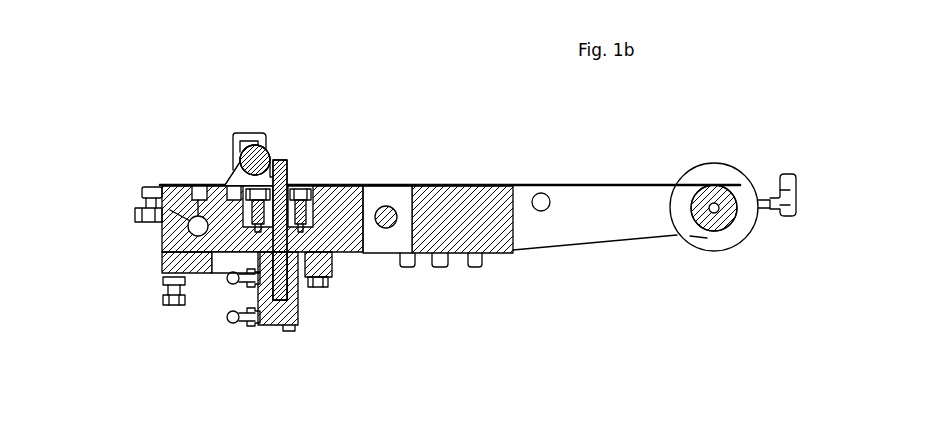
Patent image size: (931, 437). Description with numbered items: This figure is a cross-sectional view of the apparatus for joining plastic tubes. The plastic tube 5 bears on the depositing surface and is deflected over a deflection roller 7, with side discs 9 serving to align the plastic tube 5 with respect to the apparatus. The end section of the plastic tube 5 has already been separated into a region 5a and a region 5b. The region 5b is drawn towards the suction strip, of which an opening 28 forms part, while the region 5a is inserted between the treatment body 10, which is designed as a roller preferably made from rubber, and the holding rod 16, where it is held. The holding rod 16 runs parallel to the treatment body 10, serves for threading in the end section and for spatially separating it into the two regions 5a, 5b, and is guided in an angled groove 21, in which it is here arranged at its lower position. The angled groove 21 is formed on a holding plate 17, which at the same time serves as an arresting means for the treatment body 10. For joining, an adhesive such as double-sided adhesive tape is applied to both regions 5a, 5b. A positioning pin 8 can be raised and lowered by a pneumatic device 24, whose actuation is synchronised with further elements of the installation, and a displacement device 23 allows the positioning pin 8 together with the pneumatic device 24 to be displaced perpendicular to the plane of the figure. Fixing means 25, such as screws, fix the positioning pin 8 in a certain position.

The plastic tube 5 is at (530, 186).
The region of the plastic tube 5a is at (232, 172).
The region of the plastic tube 5b is at (192, 186).
The deflection roller 7 is at (703, 192).
The positioning pin 8 is at (282, 185).
The side discs 9 is at (707, 238).
The treatment body 10 is at (287, 162).
The holding rod 16 is at (237, 168).
The holding plate 17 is at (279, 175).
The angled groove 21 is at (245, 133).
The displacement device 23 is at (298, 186).
The pneumatic device 24 is at (272, 325).
The fixing means 25 is at (300, 212).
The opening 28 is at (160, 222).